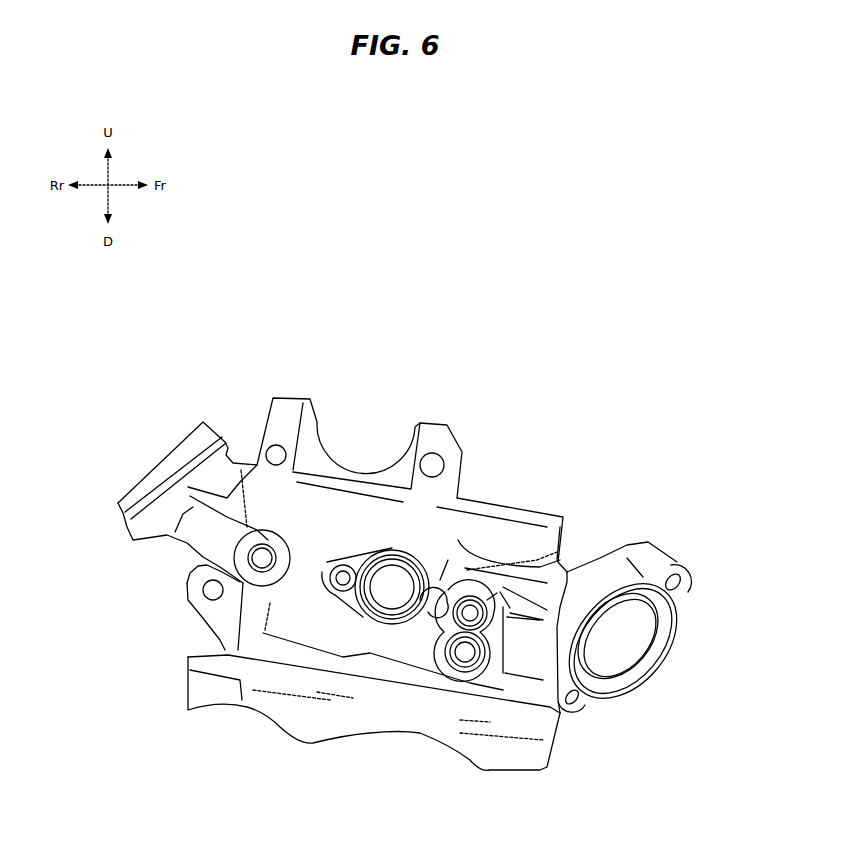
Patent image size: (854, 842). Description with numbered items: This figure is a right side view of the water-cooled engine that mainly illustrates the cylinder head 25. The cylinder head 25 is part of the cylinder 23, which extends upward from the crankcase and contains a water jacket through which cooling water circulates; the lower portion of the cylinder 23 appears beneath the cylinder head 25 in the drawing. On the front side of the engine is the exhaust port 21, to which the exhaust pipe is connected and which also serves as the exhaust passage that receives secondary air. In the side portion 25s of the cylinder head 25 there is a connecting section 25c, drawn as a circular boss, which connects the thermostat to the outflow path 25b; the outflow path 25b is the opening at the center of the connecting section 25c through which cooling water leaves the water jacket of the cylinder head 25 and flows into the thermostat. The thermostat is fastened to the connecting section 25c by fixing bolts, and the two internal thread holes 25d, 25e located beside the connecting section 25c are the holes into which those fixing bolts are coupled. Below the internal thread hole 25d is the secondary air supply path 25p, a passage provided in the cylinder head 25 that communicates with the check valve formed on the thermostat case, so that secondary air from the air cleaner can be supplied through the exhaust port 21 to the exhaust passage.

The cylinder head 25 is at (572, 511).
The side portion 25s is at (378, 640).
The connecting section 25c is at (367, 540).
The outflow path 25b is at (393, 582).
The internal thread hole 25e is at (337, 592).
The internal thread hole 25d is at (479, 602).
The secondary air supply path 25p is at (465, 652).
The exhaust port 21 is at (633, 637).
The cylinder 23 is at (538, 757).